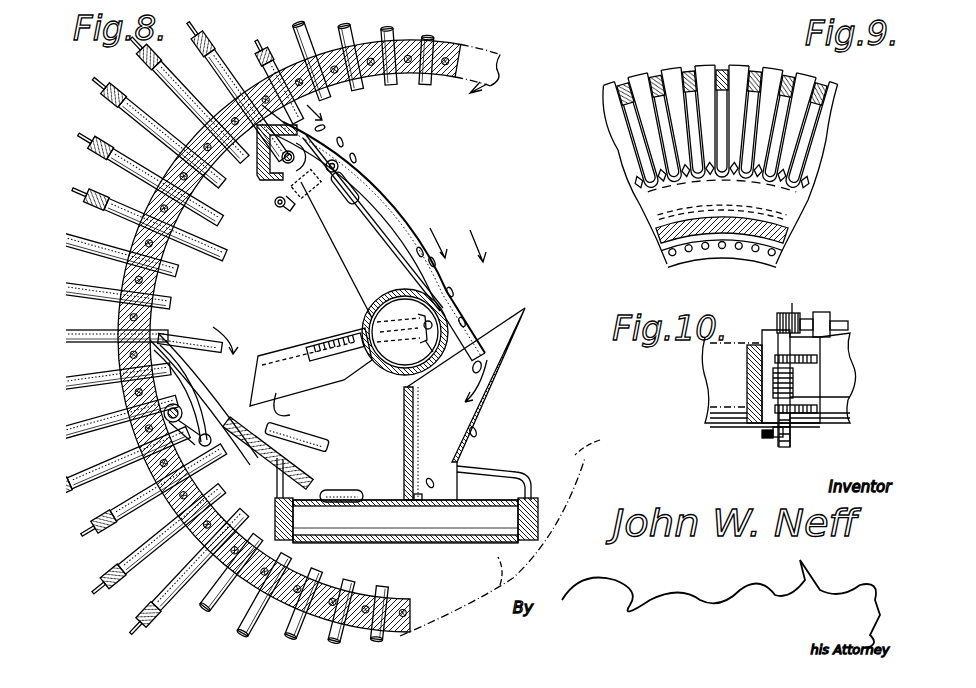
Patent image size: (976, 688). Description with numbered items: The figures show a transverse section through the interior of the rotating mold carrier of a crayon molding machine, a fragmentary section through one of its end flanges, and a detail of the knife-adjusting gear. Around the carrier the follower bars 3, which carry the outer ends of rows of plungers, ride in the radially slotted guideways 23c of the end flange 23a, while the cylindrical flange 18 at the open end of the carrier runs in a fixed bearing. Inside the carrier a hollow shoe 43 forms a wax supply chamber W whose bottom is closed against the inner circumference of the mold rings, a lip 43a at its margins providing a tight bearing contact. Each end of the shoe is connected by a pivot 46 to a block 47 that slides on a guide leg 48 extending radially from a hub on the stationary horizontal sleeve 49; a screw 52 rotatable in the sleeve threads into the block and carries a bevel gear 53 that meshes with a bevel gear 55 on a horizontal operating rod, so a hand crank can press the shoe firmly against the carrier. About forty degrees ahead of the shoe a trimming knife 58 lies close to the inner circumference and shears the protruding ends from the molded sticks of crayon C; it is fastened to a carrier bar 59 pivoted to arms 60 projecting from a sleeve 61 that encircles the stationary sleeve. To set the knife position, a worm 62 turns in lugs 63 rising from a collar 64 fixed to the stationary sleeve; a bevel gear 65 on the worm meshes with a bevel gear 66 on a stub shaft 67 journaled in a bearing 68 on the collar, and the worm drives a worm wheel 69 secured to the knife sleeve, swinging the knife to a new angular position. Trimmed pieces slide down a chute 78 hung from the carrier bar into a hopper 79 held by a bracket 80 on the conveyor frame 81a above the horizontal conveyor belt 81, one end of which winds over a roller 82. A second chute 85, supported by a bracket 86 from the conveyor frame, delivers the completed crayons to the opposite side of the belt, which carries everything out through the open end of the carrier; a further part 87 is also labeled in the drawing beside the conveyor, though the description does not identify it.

In FIG. 9, the follower bar 3 is at (627, 82).
In FIG. 9, the cylindrical flange 18 is at (652, 240).
In FIG. 9, the flange 23a is at (800, 205).
In FIG. 9, the guideway 23c is at (667, 116).
In FIG. 8, the shoe 43 is at (225, 455).
In FIG. 8, the lip 43a is at (140, 356).
In FIG. 8, the pivot 46 is at (212, 442).
In FIG. 8, the block 47 is at (312, 398).
In FIG. 8, the guide leg 48 is at (295, 340).
In FIG. 8, the stationary horizontal sleeve 49 is at (397, 295).
In FIG. 10, the stationary horizontal sleeve 49 is at (846, 350).
In FIG. 8, the screw 52 is at (350, 376).
In FIG. 8, the bevel gear 53 is at (457, 380).
In FIG. 8, the bevel gear 55 is at (468, 298).
In FIG. 8, the trimming knife 58 is at (256, 172).
In FIG. 8, the carrier bar 59 is at (276, 208).
In FIG. 8, the arm 60 is at (332, 248).
In FIG. 10, the arm 60 is at (750, 375).
In FIG. 10, the sleeve 61 is at (713, 340).
In FIG. 10, the worm 62 is at (760, 428).
In FIG. 10, the lug 63 is at (812, 362).
In FIG. 10, the collar 64 is at (792, 433).
In FIG. 10, the bevel gear 65 is at (775, 335).
In FIG. 10, the bevel gear 66 is at (795, 315).
In FIG. 10, the stub shaft 67 is at (833, 315).
In FIG. 10, the bearing 68 is at (823, 312).
In FIG. 10, the worm wheel 69 is at (777, 437).
In FIG. 8, the chute 78 is at (387, 205).
In FIG. 8, the hopper 79 is at (485, 390).
In FIG. 8, the bracket 80 is at (485, 478).
In FIG. 8, the conveyor belt 81 is at (366, 490).
In FIG. 8, the conveyor frame 81a is at (540, 522).
In FIG. 8, the roller 82 is at (393, 523).
In FIG. 8, the second chute 85 is at (228, 340).
In FIG. 8, the bracket 86 is at (274, 515).
In FIG. 8, the pipe 87 is at (538, 500).
In FIG. 8, the crayon C is at (177, 337).
In FIG. 8, the wax supply chamber W is at (140, 392).